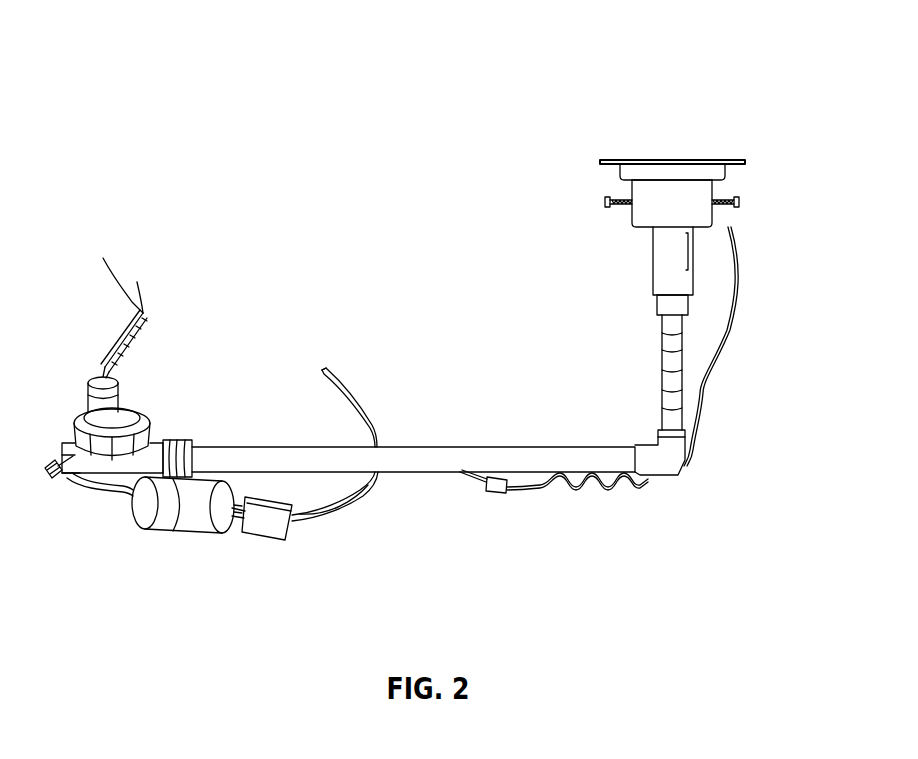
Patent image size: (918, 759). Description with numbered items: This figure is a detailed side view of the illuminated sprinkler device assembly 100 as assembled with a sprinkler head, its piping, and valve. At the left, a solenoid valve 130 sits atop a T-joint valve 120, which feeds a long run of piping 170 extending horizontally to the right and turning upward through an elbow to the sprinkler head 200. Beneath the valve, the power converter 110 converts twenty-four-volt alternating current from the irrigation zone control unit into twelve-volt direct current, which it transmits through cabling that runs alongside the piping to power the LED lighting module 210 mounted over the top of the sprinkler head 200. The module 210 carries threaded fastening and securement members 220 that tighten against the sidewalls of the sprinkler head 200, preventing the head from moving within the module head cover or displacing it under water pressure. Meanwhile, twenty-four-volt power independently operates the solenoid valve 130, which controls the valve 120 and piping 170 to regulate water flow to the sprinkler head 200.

The illuminated sprinkler device assembly 100 is at (337, 148).
The power converter 110 is at (165, 495).
The T-joint valve 120 is at (138, 400).
The solenoid valve 130 is at (90, 395).
The piping 170 is at (462, 447).
The sprinkler head 200 is at (660, 285).
The LED lighting module 210 is at (586, 157).
The threaded fastening and securement members 220 is at (606, 202).